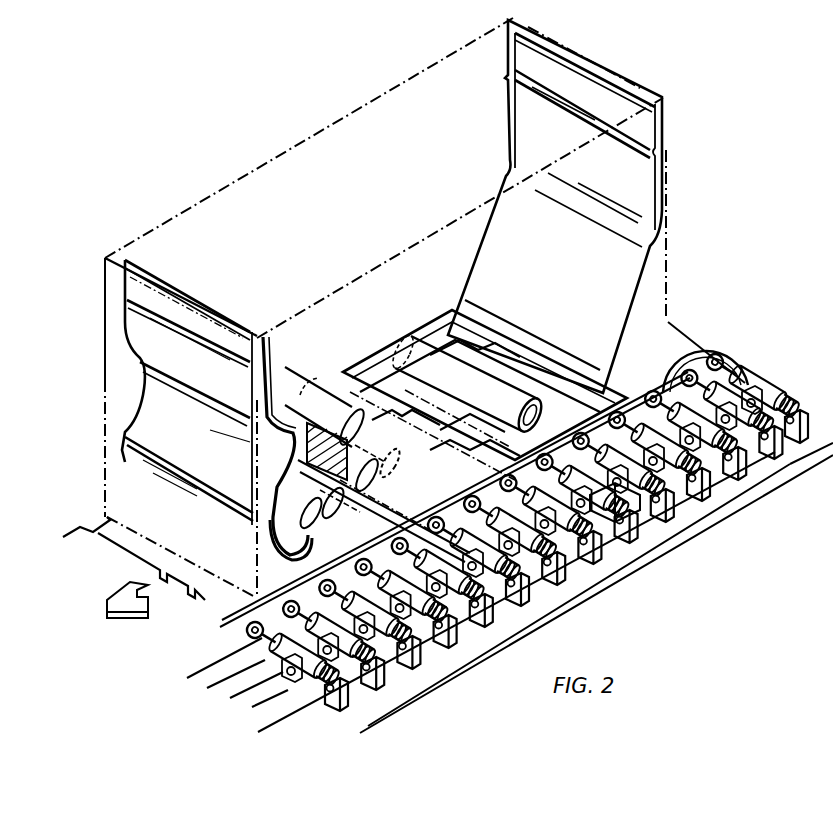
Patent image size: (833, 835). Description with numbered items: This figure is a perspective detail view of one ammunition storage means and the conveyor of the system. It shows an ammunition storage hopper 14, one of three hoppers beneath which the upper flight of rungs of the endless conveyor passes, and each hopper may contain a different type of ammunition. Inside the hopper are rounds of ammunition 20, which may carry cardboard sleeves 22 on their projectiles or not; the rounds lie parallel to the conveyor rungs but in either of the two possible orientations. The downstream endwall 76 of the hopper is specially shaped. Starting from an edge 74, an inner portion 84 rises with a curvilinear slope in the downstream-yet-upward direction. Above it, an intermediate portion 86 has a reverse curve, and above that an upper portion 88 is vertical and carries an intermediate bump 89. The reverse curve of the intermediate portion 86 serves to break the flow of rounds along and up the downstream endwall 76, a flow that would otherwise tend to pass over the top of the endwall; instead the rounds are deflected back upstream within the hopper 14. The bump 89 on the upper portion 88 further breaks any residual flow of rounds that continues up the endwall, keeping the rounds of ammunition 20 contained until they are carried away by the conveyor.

The ammunition storage hopper 14 is at (298, 143).
The round of ammunition 20 is at (420, 333).
The cardboard sleeve 22 is at (503, 383).
The edge 74 is at (362, 505).
The downstream endwall 76 is at (122, 330).
The inner portion 84 is at (263, 560).
The intermediate portion 86 is at (317, 423).
The upper portion 88 is at (273, 397).
The intermediate bump 89 is at (283, 383).